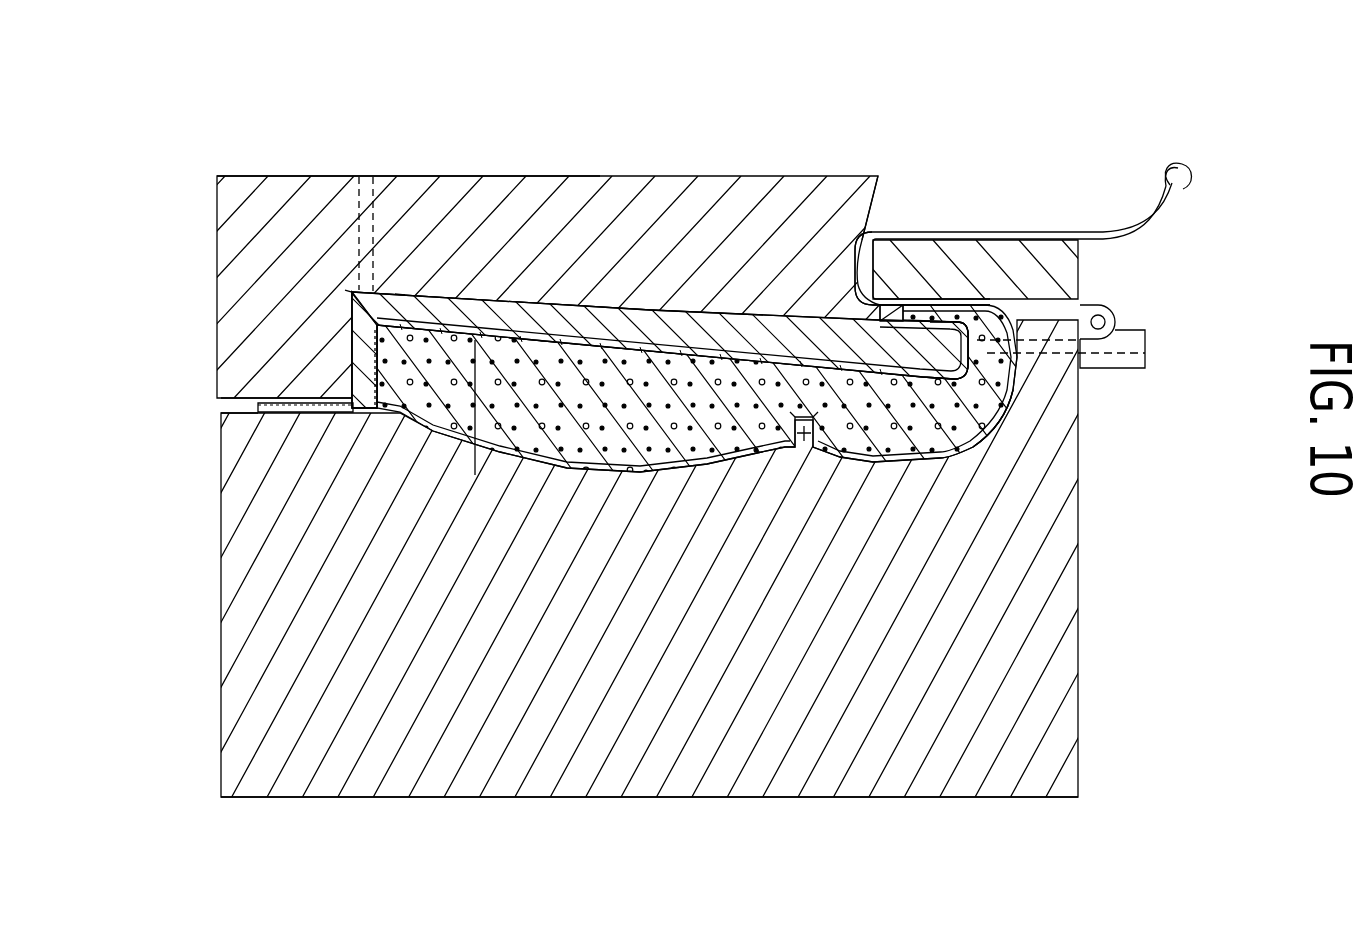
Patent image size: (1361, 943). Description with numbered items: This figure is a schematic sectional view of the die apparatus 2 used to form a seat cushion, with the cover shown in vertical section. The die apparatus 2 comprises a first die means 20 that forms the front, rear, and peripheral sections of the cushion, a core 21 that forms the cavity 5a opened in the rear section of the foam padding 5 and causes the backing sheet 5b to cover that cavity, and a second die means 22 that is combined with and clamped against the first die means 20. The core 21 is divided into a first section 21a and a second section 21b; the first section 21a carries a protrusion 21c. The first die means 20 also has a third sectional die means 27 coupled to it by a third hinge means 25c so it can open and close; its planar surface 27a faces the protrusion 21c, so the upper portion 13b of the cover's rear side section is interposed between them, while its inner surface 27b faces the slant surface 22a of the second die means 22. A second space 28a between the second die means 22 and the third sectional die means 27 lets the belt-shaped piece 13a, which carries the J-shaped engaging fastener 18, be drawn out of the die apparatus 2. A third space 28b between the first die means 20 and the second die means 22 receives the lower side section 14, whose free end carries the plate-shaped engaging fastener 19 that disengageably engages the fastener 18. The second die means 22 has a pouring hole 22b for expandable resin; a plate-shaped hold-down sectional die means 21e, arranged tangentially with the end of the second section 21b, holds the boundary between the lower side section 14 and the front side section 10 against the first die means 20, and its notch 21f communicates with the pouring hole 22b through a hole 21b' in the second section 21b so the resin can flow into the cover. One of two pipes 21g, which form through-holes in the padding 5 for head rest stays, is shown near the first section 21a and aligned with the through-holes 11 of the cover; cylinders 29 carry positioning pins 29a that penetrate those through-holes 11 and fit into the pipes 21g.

The die apparatus 2 is at (250, 168).
The foam padding 5 is at (607, 405).
The cavity 5a is at (763, 367).
The backing sheet 5b is at (475, 470).
The front side section 10 is at (542, 465).
The through-holes 11 is at (1010, 403).
The belt-shaped piece 13a is at (1127, 225).
The upper portion of the rear side section 13b is at (963, 298).
The lower side section 14 is at (313, 398).
The engaging fastener 18 is at (1172, 162).
The engaging fastener 19 is at (273, 403).
The first die means 20 is at (663, 642).
The core 21 is at (597, 304).
The first section of the core 21a is at (925, 380).
The second section of the core 21b is at (669, 229).
The hole 21b' is at (314, 194).
The protrusion 21c is at (940, 318).
The hold-down sectional die means 21e is at (350, 333).
The notch 21f is at (400, 290).
The pipes 21g is at (997, 360).
The second die means 22 is at (531, 177).
The slant surface 22a is at (877, 205).
The pouring hole 22b is at (359, 177).
The third hinge means 25c is at (1110, 313).
The third sectional die means 27 is at (1080, 258).
The planar surface 27a is at (882, 280).
The inner surface 27b is at (853, 235).
The second space 28a is at (868, 310).
The third space 28b is at (258, 408).
The cylinders 29 is at (1147, 340).
The positioning pins 29a is at (1145, 353).